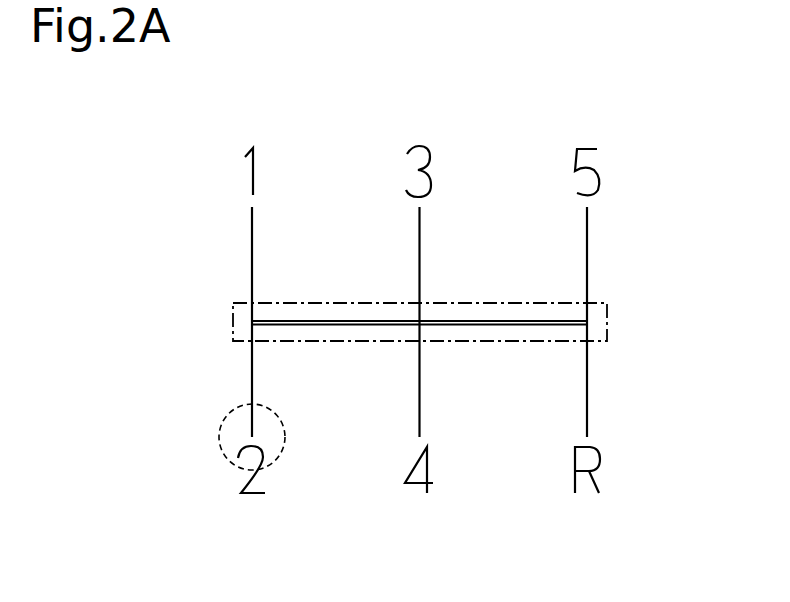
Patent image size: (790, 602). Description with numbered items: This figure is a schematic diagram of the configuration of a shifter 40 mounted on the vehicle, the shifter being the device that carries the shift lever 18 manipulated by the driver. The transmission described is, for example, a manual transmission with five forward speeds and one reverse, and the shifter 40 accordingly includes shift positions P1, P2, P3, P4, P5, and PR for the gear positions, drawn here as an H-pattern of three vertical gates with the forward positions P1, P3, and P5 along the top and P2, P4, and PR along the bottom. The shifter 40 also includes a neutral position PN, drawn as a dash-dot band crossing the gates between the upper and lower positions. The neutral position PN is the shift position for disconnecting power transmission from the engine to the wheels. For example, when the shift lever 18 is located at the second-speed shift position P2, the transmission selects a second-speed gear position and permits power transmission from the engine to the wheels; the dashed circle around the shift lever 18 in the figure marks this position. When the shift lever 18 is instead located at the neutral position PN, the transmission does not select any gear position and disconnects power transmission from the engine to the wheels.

The shifter 40 is at (441, 306).
The shift lever 18 is at (219, 437).
The neutral position PN is at (512, 303).
The shift position P1 is at (219, 128).
The second-speed shift position P2 is at (217, 516).
The shift position P3 is at (387, 128).
The shift position P4 is at (385, 516).
The shift position P5 is at (552, 128).
The shift position PR is at (552, 516).